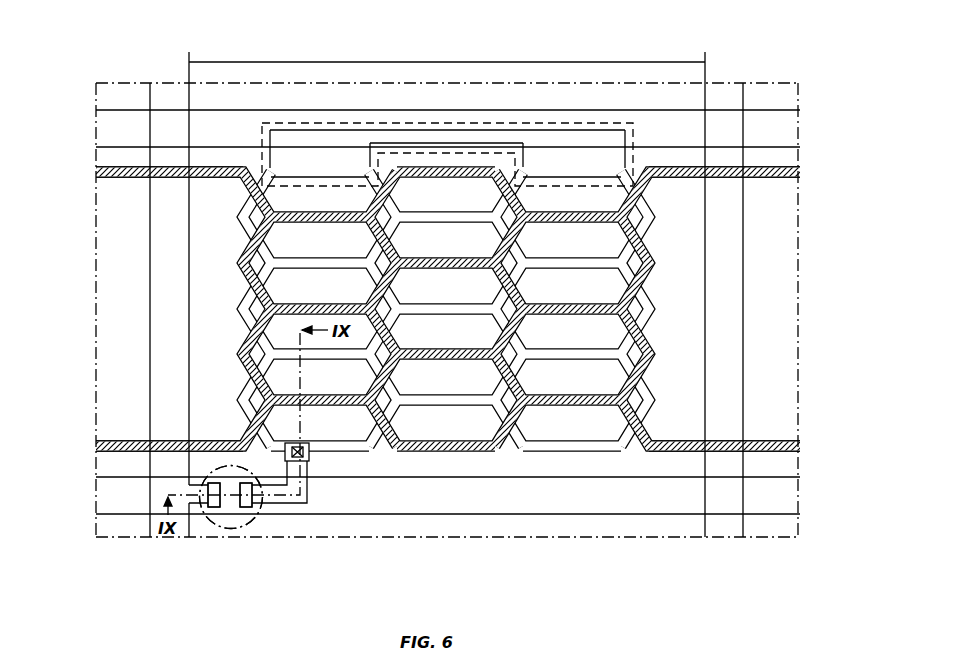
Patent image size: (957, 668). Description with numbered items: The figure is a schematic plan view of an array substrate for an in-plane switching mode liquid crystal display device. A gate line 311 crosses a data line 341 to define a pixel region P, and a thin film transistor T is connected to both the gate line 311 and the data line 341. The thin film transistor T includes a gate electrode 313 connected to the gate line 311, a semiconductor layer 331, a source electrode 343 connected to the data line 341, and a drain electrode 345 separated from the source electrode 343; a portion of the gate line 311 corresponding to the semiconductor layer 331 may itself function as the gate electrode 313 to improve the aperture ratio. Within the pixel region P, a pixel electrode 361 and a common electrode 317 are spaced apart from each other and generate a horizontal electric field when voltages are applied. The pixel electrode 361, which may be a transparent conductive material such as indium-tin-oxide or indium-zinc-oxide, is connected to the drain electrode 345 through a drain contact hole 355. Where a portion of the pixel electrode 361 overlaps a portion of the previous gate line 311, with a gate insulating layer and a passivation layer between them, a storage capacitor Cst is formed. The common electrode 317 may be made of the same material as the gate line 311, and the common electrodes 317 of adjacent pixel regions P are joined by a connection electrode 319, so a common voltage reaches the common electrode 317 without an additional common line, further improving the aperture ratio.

The gate line 311 is at (763, 120).
The gate electrode 313 is at (233, 510).
The common electrode 317 is at (472, 452).
The connection electrode 319 is at (116, 178).
The semiconductor layer 331 is at (227, 483).
The data line 341 is at (155, 533).
The source electrode 343 is at (203, 500).
The drain electrode 345 is at (310, 500).
The drain contact hole 355 is at (312, 462).
The pixel electrode 361 is at (604, 449).
The thin film transistor T is at (258, 503).
The pixel region P is at (448, 290).
The storage capacitor Cst is at (262, 142).